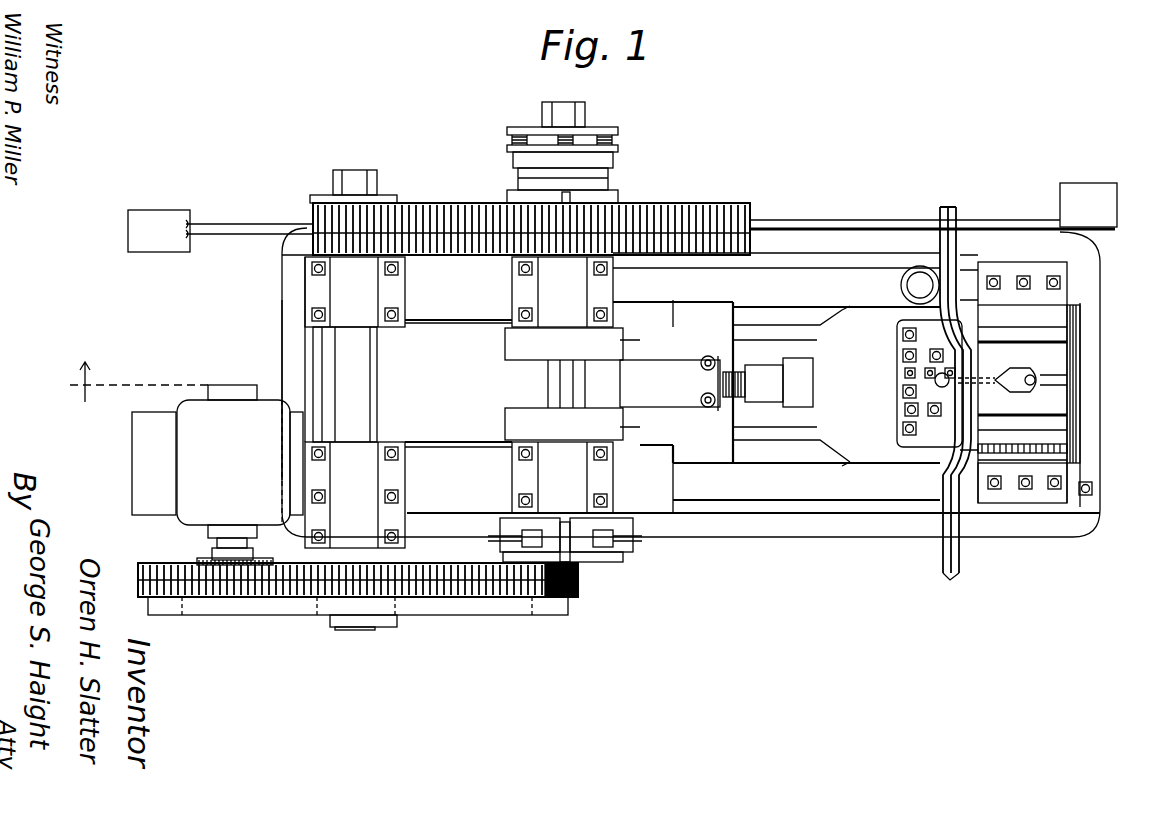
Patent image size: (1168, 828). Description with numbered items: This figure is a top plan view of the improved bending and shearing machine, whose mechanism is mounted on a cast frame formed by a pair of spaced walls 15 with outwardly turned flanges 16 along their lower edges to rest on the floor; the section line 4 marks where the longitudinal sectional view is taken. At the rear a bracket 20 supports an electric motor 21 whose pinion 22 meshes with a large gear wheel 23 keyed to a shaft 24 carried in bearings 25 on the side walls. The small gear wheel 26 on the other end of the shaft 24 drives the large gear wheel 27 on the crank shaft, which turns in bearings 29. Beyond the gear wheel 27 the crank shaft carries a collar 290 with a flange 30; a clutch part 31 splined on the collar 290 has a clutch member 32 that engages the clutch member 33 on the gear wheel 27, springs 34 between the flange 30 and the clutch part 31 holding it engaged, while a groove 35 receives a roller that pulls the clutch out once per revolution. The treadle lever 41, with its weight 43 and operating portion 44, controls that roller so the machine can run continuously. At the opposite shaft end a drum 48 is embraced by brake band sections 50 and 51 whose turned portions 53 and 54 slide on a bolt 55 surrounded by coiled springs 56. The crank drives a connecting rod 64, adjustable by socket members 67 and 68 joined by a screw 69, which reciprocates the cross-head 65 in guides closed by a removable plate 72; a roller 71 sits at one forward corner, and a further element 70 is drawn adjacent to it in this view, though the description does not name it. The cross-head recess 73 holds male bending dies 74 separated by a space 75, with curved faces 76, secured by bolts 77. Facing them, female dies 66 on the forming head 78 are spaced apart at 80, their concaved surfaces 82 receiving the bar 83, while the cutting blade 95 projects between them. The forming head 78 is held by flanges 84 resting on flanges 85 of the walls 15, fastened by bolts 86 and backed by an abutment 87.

The section line 4 is at (140, 373).
The spaced walls 15 is at (830, 252).
The outwardly turned flanges 16 is at (905, 225).
The bracket 20 is at (150, 452).
The electric motor 21 is at (195, 415).
The pinion 22 is at (202, 560).
The large gear wheel 23 is at (140, 577).
The shaft 24 is at (355, 630).
The bearings 25 is at (310, 297).
The small gear wheel 26 is at (312, 212).
The large gear wheel 27 is at (748, 212).
The bearings 29 is at (572, 296).
The flange 30 is at (580, 125).
The clutch part 31 is at (613, 160).
The clutch member 32 is at (575, 200).
The clutch member 33 is at (560, 200).
The springs 34 is at (512, 141).
The groove 35 is at (518, 170).
The treadle lever 41 is at (255, 208).
The weight 43 is at (160, 246).
The operating portion 44 is at (1117, 217).
The drum 48 is at (617, 556).
The brake band section 50 is at (495, 538).
The brake band section 51 is at (630, 555).
The turned portion 53 is at (573, 592).
The turned portion 54 is at (580, 558).
The bolt 55 is at (594, 518).
The coiled spring 56 is at (572, 520).
The connecting rod 64 is at (657, 385).
The cross-head 65 is at (836, 386).
The female dies 66 is at (970, 303).
The socket member 67 is at (690, 370).
The socket member 68 is at (765, 385).
The screw 69 is at (716, 357).
The bearing 70 is at (912, 280).
The roller 71 is at (917, 277).
The removable plate 72 is at (705, 478).
The recess 73 is at (905, 340).
The male bending dies 74 is at (903, 355).
The space 75 is at (905, 378).
The curved faces 76 is at (960, 328).
The bolts 77 is at (950, 402).
The forming head 78 is at (1067, 445).
The space 80 is at (1028, 392).
The concaved surfaces 82 is at (967, 440).
The bar 83 is at (955, 575).
The laterally projecting flanges 84 is at (1048, 490).
The flanges 85 is at (1082, 470).
The bolts 86 is at (1053, 276).
The abutment 87 is at (1080, 420).
The cutting blade 95 is at (975, 380).
The collar 290 is at (618, 141).